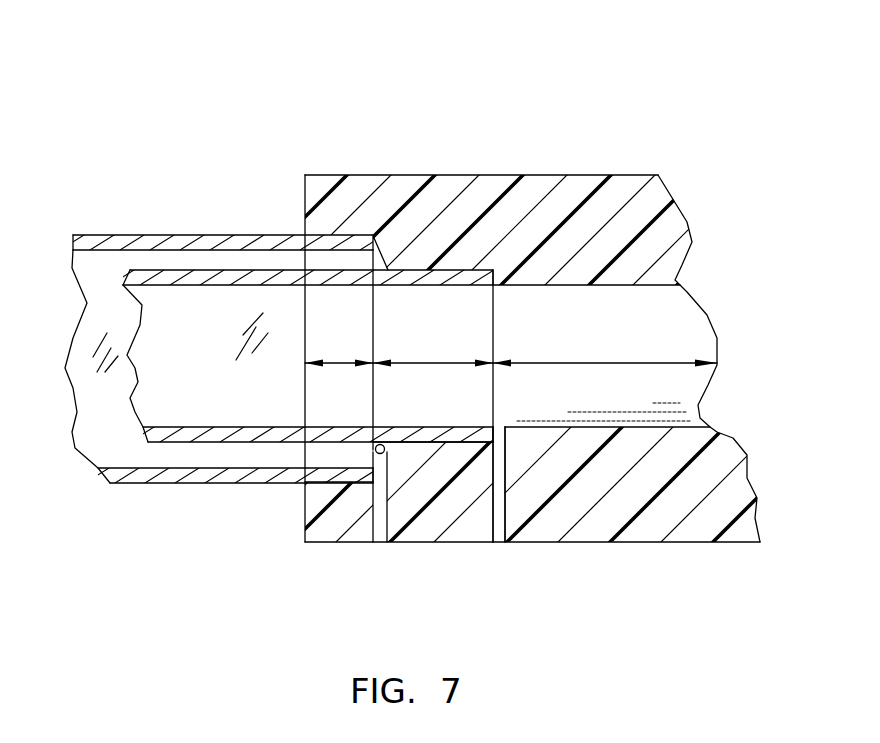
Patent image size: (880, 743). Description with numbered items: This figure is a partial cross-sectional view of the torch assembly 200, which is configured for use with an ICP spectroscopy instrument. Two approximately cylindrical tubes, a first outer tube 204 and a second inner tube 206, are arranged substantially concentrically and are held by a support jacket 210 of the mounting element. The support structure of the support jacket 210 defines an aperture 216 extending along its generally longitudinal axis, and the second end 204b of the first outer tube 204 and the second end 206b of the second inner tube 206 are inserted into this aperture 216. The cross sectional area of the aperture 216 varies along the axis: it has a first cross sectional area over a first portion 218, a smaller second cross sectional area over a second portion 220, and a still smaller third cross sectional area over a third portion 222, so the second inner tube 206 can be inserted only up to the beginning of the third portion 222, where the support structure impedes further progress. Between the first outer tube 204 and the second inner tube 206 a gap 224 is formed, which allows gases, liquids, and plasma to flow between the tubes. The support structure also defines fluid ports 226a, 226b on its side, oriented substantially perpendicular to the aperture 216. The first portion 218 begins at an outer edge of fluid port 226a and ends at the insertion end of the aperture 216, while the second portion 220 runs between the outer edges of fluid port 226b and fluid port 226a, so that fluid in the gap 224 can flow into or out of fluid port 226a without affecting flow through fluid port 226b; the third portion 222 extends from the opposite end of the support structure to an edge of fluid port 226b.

The torch assembly 200 is at (358, 133).
The first outer tube 204 is at (128, 235).
The second end of the first outer tube 204b is at (332, 243).
The second inner tube 206 is at (177, 443).
The second end of the second inner tube 206b is at (472, 270).
The support jacket 210 is at (537, 175).
The aperture 216 is at (585, 323).
The first portion 218 is at (338, 365).
The second portion 220 is at (427, 367).
The third portion 222 is at (622, 363).
The gap 224 is at (245, 258).
The fluid port 226a is at (381, 528).
The fluid port 226b is at (501, 517).